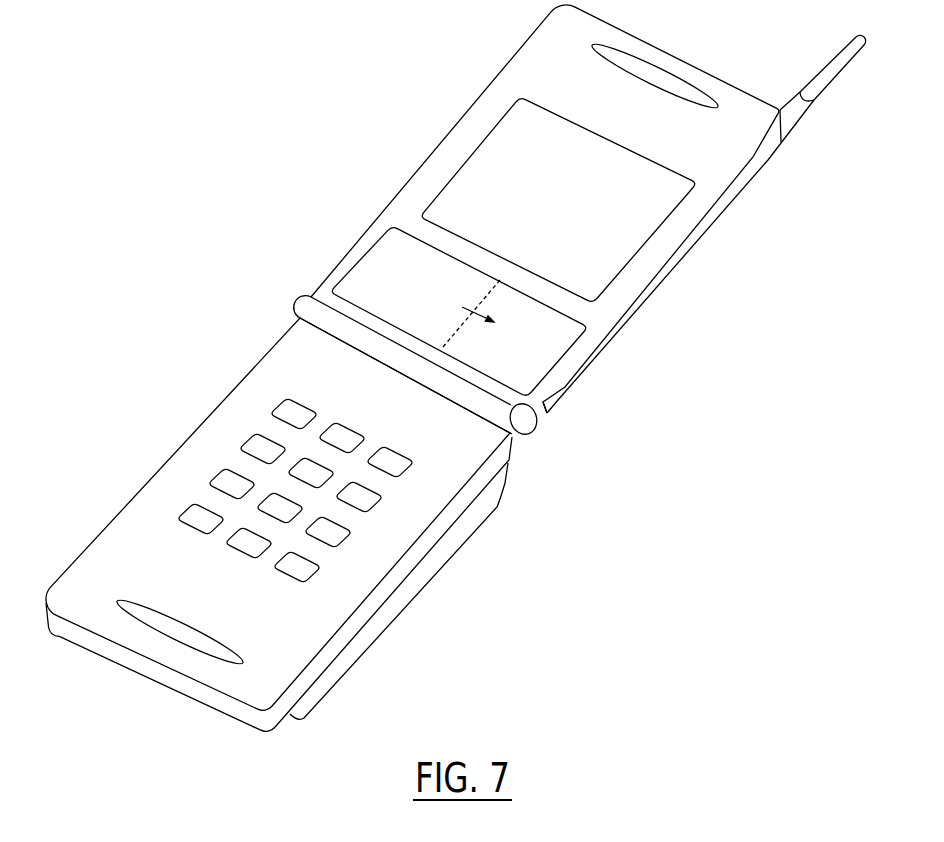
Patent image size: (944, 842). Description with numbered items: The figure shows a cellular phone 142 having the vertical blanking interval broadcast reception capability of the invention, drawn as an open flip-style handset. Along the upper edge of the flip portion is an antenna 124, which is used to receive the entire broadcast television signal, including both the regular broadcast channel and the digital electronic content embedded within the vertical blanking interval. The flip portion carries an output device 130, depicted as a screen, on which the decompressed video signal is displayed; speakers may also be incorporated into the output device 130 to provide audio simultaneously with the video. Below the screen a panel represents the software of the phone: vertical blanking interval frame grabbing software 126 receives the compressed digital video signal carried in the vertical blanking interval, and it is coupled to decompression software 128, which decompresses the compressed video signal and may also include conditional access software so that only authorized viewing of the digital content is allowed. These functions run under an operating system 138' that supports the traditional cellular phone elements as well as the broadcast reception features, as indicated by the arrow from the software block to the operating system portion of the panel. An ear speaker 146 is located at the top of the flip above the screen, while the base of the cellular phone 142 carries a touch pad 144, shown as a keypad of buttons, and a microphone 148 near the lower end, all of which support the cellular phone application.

The antenna 124 is at (802, 93).
The vertical blanking interval frame grabbing software 126 is at (420, 298).
The decompression software 128 is at (372, 244).
The output device 130 is at (480, 143).
The operating system 138' is at (623, 372).
The cellular phone 142 is at (708, 236).
The touch pad 144 is at (321, 599).
The ear speaker 146 is at (647, 60).
The microphone 148 is at (203, 655).